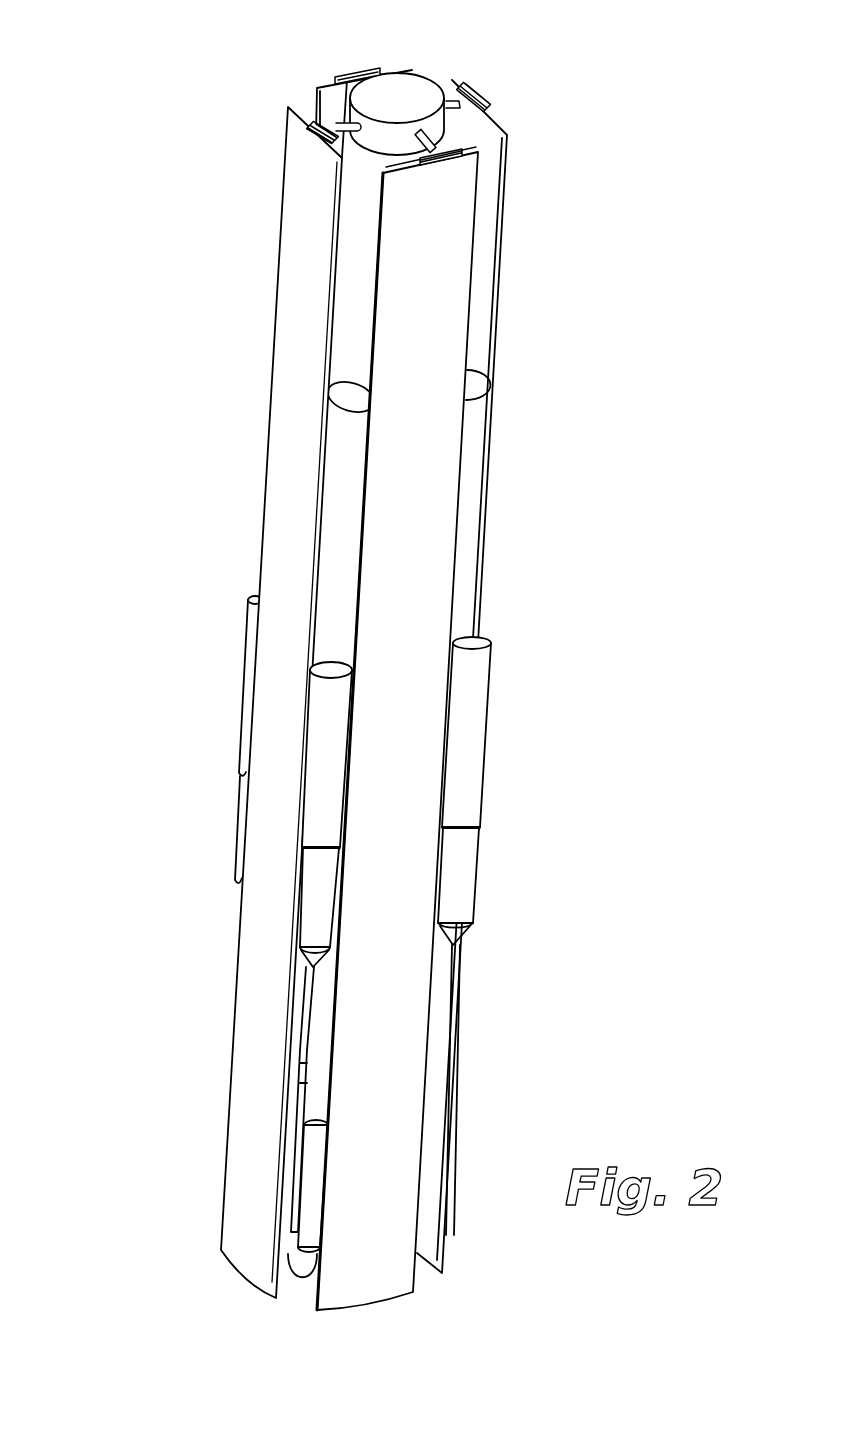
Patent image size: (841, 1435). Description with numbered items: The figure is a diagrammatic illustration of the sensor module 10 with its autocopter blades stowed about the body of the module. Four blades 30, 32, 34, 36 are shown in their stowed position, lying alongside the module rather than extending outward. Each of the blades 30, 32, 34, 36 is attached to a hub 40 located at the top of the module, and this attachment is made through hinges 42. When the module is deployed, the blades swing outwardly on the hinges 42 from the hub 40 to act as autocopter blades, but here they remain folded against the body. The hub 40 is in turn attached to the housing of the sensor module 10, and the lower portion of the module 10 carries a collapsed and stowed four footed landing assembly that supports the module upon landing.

The sensor module 10 is at (333, 667).
The blade 30 is at (285, 432).
The blade 32 is at (425, 438).
The blade 34 is at (502, 297).
The blade 36 is at (316, 97).
The hub 40 is at (413, 97).
The hinges 42 is at (347, 77).